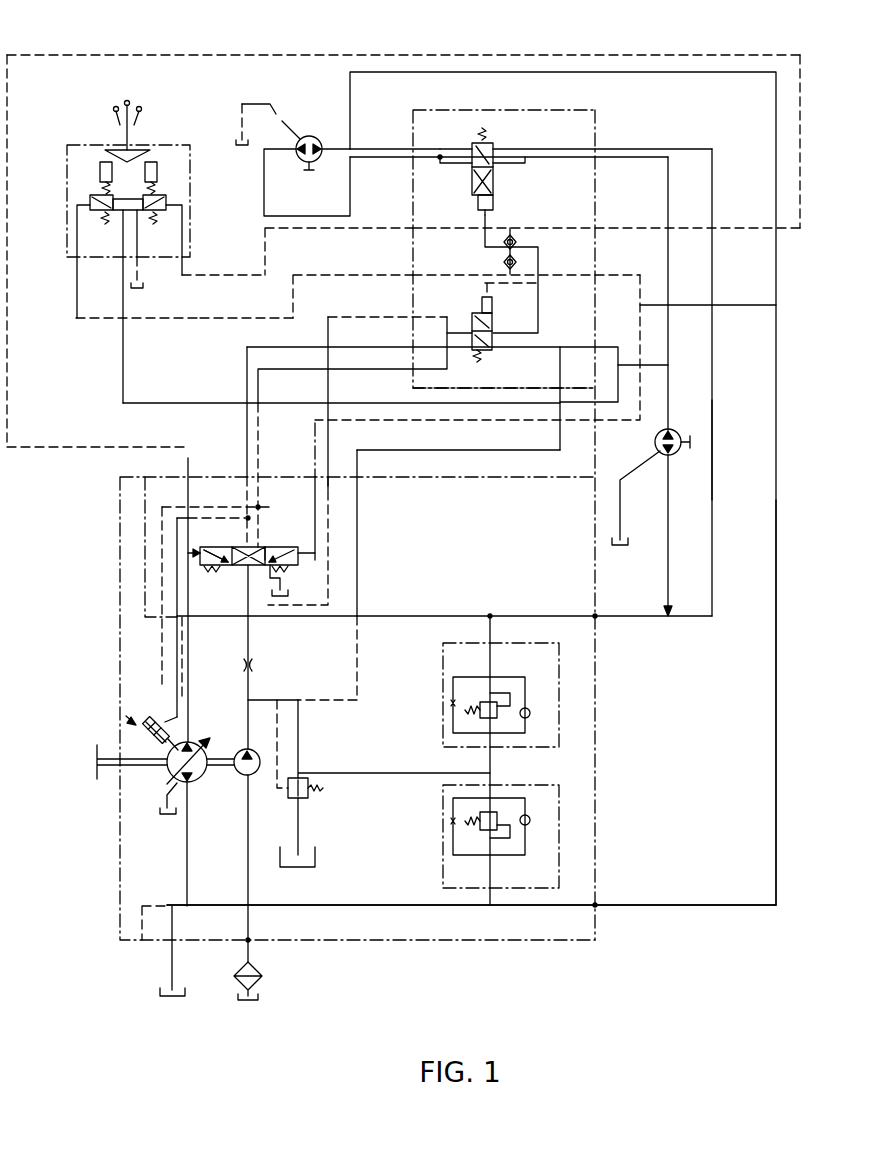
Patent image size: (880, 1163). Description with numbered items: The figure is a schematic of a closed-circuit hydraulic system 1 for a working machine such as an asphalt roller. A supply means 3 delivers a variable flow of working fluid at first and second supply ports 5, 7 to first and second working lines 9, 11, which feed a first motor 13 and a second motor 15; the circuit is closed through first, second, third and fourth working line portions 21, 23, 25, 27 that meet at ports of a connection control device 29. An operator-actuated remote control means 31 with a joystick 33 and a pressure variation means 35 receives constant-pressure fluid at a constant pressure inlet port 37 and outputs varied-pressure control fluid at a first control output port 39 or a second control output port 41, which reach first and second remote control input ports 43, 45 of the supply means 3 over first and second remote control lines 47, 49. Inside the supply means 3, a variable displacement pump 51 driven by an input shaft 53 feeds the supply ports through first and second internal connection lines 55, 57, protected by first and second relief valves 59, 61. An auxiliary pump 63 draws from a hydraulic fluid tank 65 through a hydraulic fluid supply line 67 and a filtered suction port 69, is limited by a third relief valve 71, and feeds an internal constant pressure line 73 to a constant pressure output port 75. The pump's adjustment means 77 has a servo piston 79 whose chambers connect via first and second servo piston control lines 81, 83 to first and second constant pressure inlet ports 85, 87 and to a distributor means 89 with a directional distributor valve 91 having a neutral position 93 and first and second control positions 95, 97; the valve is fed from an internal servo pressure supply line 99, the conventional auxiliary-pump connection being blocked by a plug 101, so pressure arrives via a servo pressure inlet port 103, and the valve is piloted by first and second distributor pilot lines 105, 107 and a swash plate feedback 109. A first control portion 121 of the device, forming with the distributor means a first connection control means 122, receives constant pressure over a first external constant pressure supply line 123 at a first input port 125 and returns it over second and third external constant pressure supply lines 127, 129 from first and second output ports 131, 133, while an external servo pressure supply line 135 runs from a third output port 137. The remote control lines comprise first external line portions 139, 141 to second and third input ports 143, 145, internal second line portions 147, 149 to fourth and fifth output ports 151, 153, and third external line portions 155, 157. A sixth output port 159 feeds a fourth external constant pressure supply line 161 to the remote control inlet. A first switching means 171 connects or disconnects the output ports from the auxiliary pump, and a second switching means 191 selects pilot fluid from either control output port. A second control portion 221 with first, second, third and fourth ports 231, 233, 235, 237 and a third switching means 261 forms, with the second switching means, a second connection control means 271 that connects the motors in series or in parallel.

The hydraulic system 1 is at (655, 925).
The supply means 3 is at (310, 945).
The first supply port 5 is at (597, 907).
The second supply port 7 is at (597, 618).
The first working line 9 is at (706, 907).
The second working line 11 is at (645, 618).
The first motor 13 is at (303, 137).
The second motor 15 is at (682, 447).
The first working line portion 21 is at (670, 400).
The second working line portion 23 is at (353, 147).
The third working line portion 25 is at (380, 155).
The fourth working line portion 27 is at (714, 405).
The connection control device 29 is at (516, 98).
The remote control means 31 is at (167, 141).
The joystick 33 is at (128, 112).
The pressure variation means 35 is at (155, 196).
The constant pressure inlet port 37 is at (117, 268).
The first control output port 39 is at (78, 268).
The second control output port 41 is at (182, 268).
The first remote control input port 43 is at (318, 483).
The second remote control input port 45 is at (186, 472).
The first remote control line 47 is at (97, 320).
The second remote control line 49 is at (215, 270).
The variable displacement pump 51 is at (140, 733).
The input shaft 53 is at (130, 757).
The first internal connection line 55 is at (410, 900).
The second internal connection line 57 is at (522, 610).
The first relief valve 59 is at (443, 786).
The second relief valve 61 is at (443, 700).
The auxiliary pump 63 is at (238, 768).
The hydraulic fluid tank 65 is at (262, 996).
The hydraulic fluid supply line 67 is at (245, 800).
The hydraulic fluid suction port 69 is at (247, 940).
The third relief valve 71 is at (312, 797).
The internal constant pressure line 73 is at (365, 660).
The constant pressure output port 75 is at (358, 482).
The adjustment means 77 is at (152, 722).
The servo piston 79 is at (128, 716).
The first servo piston control line 81 is at (172, 662).
The second servo piston control line 83 is at (162, 618).
The first constant pressure inlet port 85 is at (254, 481).
The second constant pressure inlet port 87 is at (246, 478).
The distributor means 89 is at (192, 556).
The directional distributor valve 91 is at (276, 545).
The neutral position 93 is at (250, 567).
The first control position 95 is at (233, 567).
The second control position 97 is at (282, 568).
The internal servo pressure supply line 99 is at (330, 570).
The plug 101 is at (252, 667).
The servo pressure inlet port 103 is at (332, 483).
The first distributor pilot line 105 is at (318, 535).
The second distributor pilot line 107 is at (188, 537).
The swash plate feedback 109 is at (177, 593).
The first control portion 121 is at (598, 302).
The first connection control means 122 is at (400, 359).
The first external constant pressure supply line 123 is at (480, 452).
The first input port 125 is at (563, 420).
The second external constant pressure supply line 127 is at (257, 382).
The third external constant pressure supply line 129 is at (246, 350).
The first output port 131 is at (412, 380).
The second output port 133 is at (411, 347).
The external servo pressure supply line 135 is at (327, 335).
The third output port 137 is at (412, 316).
The first external line portion 139 is at (225, 318).
The first external line portion 141 is at (312, 230).
The second input port 143 is at (412, 275).
The third input port 145 is at (412, 228).
The second line portion 147 is at (435, 275).
The second line portion 149 is at (545, 229).
The fourth output port 151 is at (598, 276).
The fifth output port 153 is at (600, 226).
The third external line portion 155 is at (776, 305).
The third external line portion 157 is at (713, 228).
The sixth output port 159 is at (597, 340).
The fourth external constant pressure supply line 161 is at (620, 365).
The first switching means 171 is at (493, 326).
The second switching means 191 is at (517, 258).
The second control portion 221 is at (583, 116).
The first port 231 is at (600, 157).
The second port 233 is at (412, 160).
The third port 235 is at (412, 150).
The fourth port 237 is at (599, 148).
The third switching means 261 is at (500, 172).
The second connection control means 271 is at (604, 186).